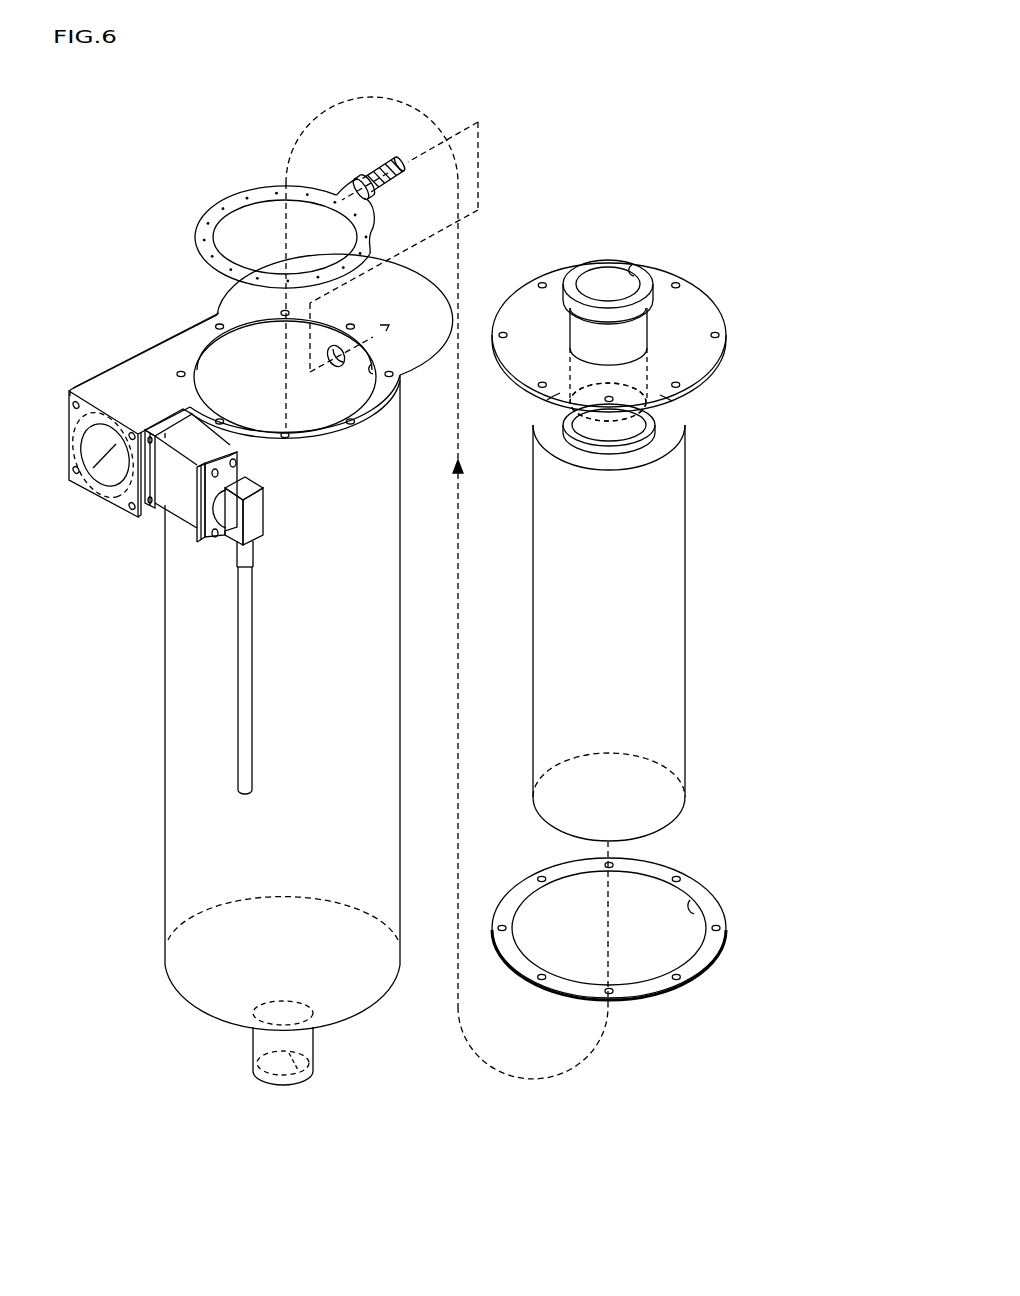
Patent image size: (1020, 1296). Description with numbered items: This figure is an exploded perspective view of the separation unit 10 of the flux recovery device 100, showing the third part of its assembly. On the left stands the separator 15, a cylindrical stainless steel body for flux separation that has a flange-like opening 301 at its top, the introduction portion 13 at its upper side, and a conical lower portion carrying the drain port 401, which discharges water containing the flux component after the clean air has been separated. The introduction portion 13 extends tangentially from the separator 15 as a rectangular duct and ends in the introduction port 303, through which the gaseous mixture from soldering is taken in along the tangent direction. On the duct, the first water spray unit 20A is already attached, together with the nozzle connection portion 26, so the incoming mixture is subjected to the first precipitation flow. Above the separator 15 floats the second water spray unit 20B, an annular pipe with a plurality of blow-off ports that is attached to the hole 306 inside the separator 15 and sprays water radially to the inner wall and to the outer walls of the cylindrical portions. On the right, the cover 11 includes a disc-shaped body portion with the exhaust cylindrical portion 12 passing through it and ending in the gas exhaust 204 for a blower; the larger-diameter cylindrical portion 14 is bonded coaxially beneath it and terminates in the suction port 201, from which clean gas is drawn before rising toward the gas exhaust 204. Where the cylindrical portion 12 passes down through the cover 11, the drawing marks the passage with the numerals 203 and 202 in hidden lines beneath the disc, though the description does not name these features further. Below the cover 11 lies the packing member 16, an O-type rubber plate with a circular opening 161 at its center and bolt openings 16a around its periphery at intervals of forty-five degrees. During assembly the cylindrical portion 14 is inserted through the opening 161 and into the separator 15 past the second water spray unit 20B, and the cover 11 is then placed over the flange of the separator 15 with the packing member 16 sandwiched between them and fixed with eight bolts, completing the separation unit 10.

The separation unit 10 is at (163, 257).
The cover 11 is at (554, 270).
The exhaust cylindrical portion 12 is at (660, 419).
The introduction portion 13 is at (130, 365).
The cylindrical portion 14 is at (686, 628).
The separator 15 is at (163, 764).
The packing member 16 is at (673, 870).
The openings 16a is at (685, 982).
The first water spray unit 20A is at (180, 518).
The second water spray unit 20B is at (210, 206).
The nozzle connection portion 26 is at (195, 635).
The flux recovery device 100 is at (665, 186).
The circular opening 161 is at (696, 902).
The suction port 201 is at (550, 817).
The opening 202 is at (558, 449).
The opening 203 is at (563, 430).
The gas exhaust 204 is at (636, 262).
The flange-like opening 301 is at (376, 365).
The introduction port 303 is at (117, 488).
The hole 306 is at (345, 348).
The drain port 401 is at (314, 1053).